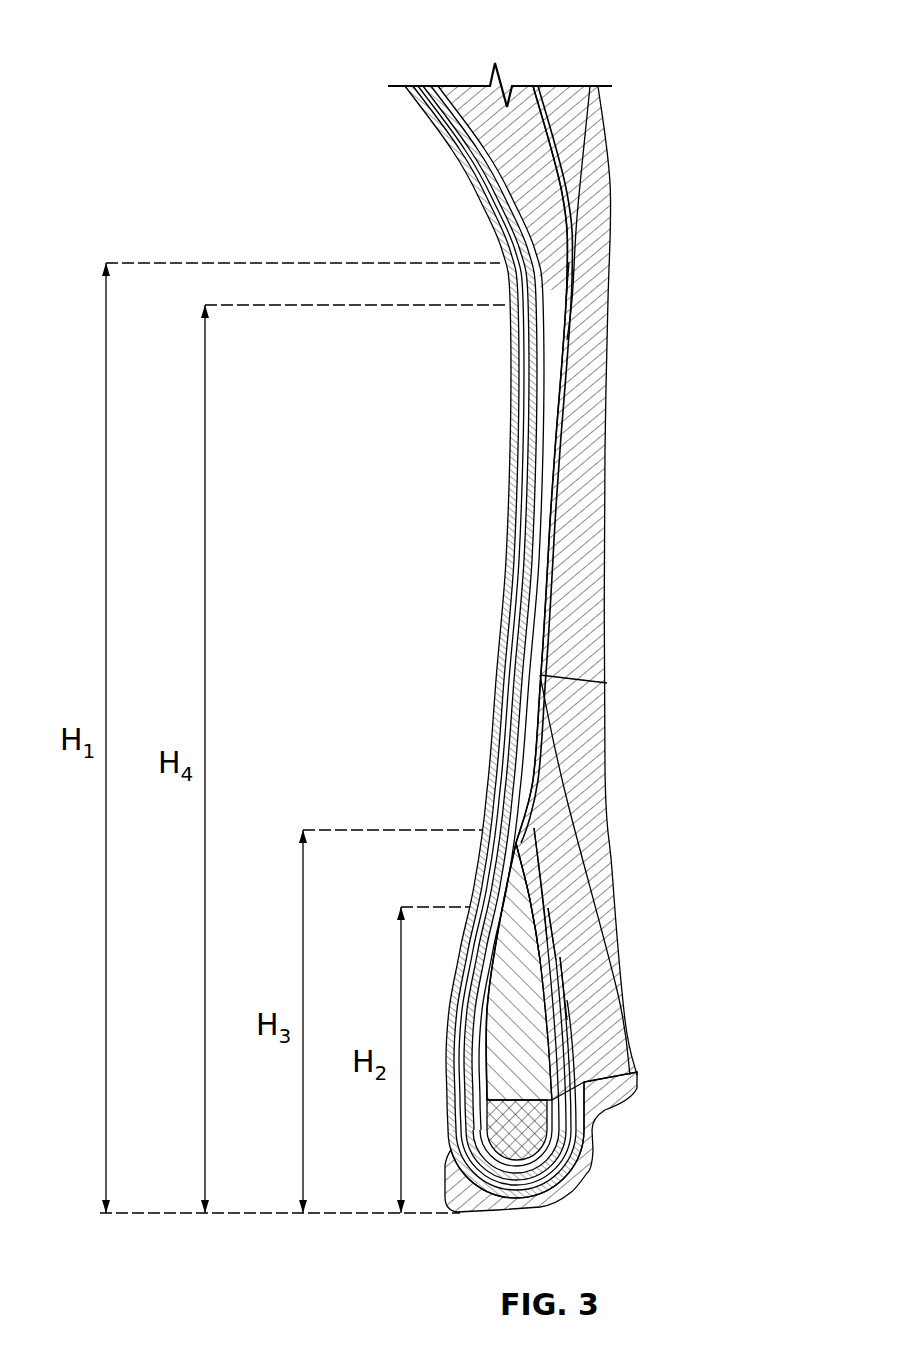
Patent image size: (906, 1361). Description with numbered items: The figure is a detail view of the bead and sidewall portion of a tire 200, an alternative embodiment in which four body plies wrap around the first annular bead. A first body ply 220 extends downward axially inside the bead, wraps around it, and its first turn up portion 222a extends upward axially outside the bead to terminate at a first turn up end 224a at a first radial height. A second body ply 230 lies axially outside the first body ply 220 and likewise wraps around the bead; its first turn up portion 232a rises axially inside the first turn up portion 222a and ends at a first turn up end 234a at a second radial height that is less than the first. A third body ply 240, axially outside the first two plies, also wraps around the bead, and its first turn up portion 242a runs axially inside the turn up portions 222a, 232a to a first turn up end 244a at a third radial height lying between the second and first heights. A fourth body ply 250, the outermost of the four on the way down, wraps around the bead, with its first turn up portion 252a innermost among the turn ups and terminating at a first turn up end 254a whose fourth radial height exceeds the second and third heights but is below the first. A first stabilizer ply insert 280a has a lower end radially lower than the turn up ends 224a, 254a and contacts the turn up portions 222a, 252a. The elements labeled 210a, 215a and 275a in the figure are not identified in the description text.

The tire 200 is at (230, 38).
The bead core 210a is at (530, 1138).
The bead filler (apex) 215a is at (520, 1078).
The first body ply 220 is at (490, 775).
The first turn up portion of the first body ply 222a is at (573, 278).
The first turn up end of the first body ply 224a is at (575, 275).
The second body ply 230 is at (505, 745).
The first turn up portion of the second body ply 232a is at (540, 957).
The first turn up end of the second body ply 234a is at (543, 908).
The third body ply 240 is at (507, 716).
The first turn up portion of the third body ply 242a is at (527, 848).
The first turn up end of the third body ply 244a is at (540, 823).
The fourth body ply 250 is at (507, 682).
The first turn up portion of the fourth body ply 252a is at (543, 495).
The first turn up end of the fourth body ply 254a is at (563, 305).
The sidewall rubber 275a is at (575, 582).
The first stabilizer ply insert 280a is at (540, 170).